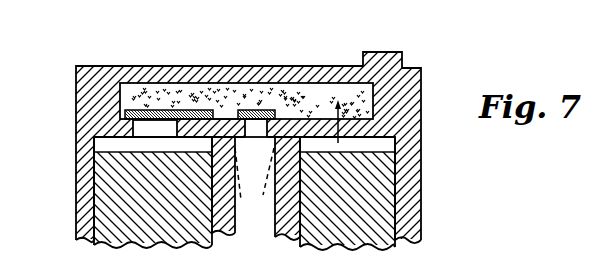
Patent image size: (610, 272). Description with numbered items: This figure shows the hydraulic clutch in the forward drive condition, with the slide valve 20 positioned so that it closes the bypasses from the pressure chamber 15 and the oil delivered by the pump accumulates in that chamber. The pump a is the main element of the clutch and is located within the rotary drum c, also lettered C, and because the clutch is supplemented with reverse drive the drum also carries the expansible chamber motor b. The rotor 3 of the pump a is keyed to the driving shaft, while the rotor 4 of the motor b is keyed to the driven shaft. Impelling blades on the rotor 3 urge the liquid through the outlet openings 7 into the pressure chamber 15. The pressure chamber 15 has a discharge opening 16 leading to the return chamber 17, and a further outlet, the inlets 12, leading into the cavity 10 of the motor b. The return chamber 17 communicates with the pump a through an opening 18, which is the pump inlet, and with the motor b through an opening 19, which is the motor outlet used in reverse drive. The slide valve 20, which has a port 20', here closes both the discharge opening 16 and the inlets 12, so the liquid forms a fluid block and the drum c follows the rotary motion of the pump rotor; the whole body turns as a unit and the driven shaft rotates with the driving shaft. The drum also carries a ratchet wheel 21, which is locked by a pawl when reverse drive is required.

The rotary drum C is at (129, 66).
The rotary drum c is at (248, 162).
The pressure chamber 15 is at (164, 88).
The slide valve 20 is at (176, 77).
The port 20' is at (244, 77).
The outlet openings 7 is at (330, 122).
The ratchet wheel 21 is at (385, 52).
The inlets 12 is at (133, 123).
The cavity 10 is at (95, 138).
The rotor 4 is at (107, 178).
The expansible chamber motor b is at (97, 208).
The rotor 3 is at (383, 185).
The pump a is at (385, 213).
The discharge opening 16 is at (253, 122).
The return chamber 17 is at (254, 212).
The opening 18 is at (264, 172).
The opening 19 is at (245, 178).